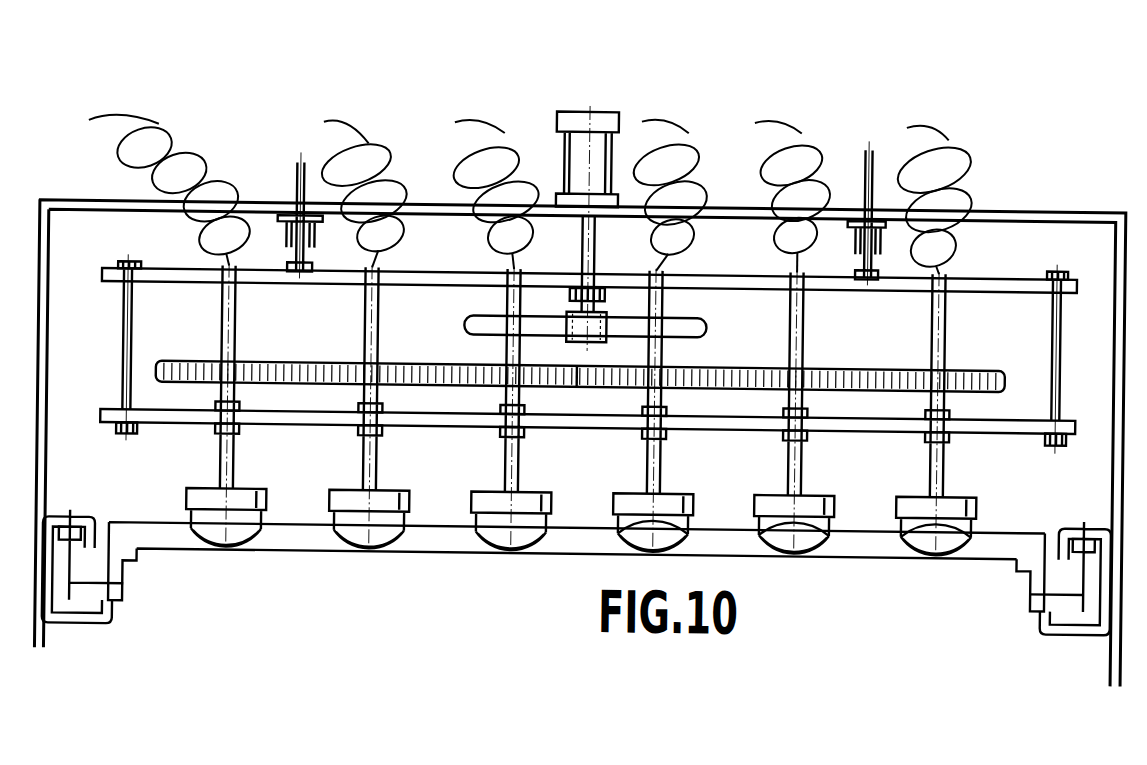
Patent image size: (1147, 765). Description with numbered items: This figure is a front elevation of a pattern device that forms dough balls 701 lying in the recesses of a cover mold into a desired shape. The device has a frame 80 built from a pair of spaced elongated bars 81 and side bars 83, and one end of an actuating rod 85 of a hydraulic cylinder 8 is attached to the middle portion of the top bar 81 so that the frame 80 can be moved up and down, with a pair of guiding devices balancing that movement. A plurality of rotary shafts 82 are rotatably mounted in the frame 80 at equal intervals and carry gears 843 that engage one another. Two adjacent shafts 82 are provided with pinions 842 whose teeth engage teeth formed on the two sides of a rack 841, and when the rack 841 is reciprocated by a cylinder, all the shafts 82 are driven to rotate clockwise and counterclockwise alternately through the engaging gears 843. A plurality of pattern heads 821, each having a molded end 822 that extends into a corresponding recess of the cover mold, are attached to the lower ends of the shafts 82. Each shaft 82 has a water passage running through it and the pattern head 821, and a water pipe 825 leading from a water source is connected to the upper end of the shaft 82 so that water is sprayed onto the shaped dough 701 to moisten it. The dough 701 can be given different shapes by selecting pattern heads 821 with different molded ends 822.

The hydraulic cylinder 8 is at (621, 122).
The frame 80 is at (997, 431).
The elongated bars 81 is at (988, 274).
The rotary shafts 82 is at (223, 455).
The side bars 83 is at (127, 375).
The actuating rod 85 is at (582, 259).
The dough balls 701 is at (208, 537).
The pattern heads 821 is at (247, 485).
The molded end 822 is at (240, 518).
The water pipe 825 is at (488, 123).
The rack 841 is at (607, 281).
The pinions 842 is at (484, 318).
The gears 843 is at (263, 358).